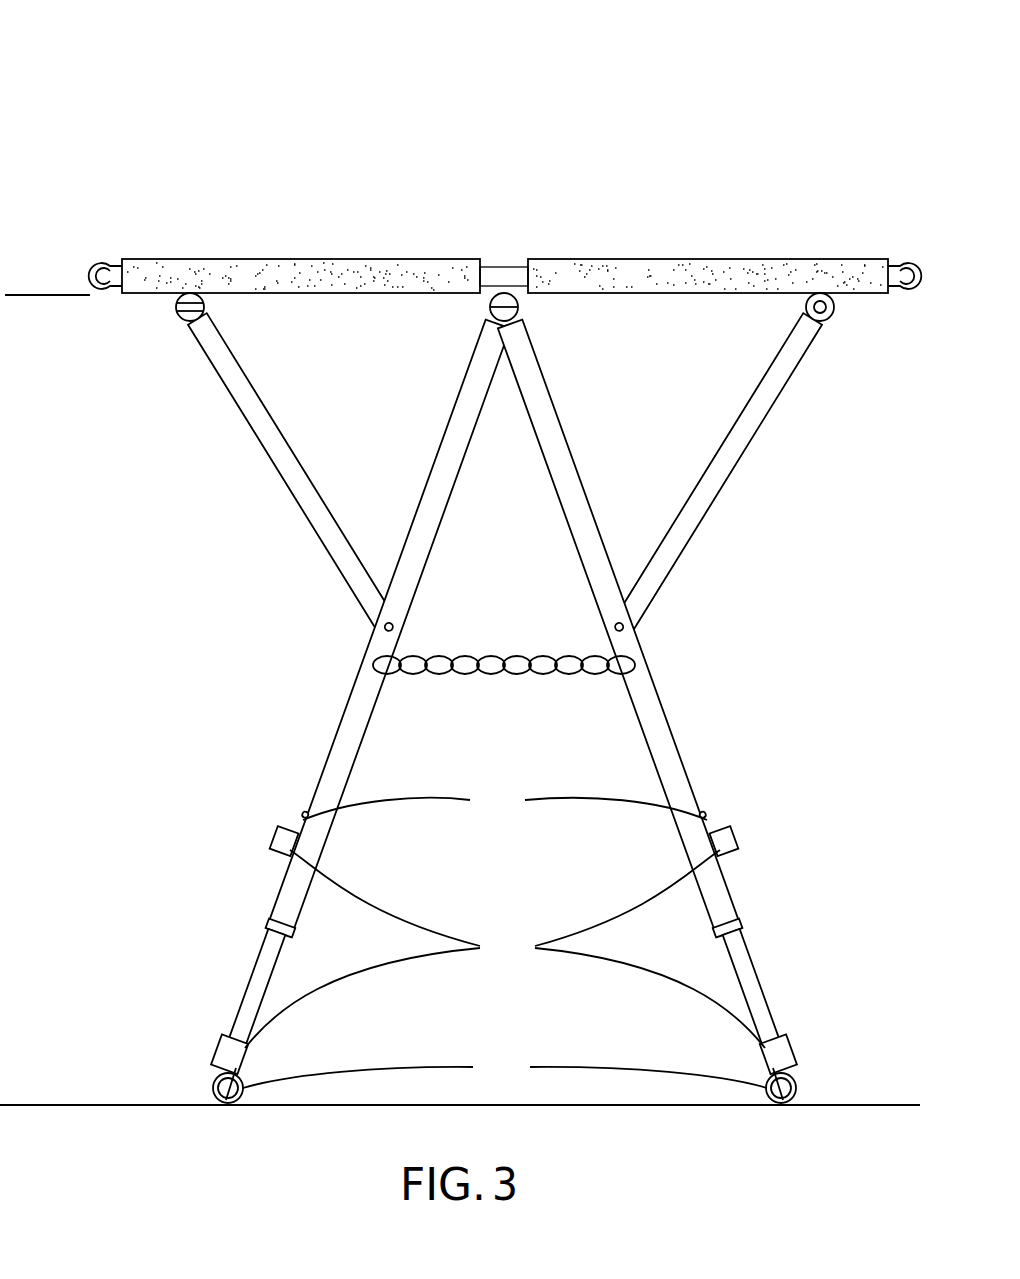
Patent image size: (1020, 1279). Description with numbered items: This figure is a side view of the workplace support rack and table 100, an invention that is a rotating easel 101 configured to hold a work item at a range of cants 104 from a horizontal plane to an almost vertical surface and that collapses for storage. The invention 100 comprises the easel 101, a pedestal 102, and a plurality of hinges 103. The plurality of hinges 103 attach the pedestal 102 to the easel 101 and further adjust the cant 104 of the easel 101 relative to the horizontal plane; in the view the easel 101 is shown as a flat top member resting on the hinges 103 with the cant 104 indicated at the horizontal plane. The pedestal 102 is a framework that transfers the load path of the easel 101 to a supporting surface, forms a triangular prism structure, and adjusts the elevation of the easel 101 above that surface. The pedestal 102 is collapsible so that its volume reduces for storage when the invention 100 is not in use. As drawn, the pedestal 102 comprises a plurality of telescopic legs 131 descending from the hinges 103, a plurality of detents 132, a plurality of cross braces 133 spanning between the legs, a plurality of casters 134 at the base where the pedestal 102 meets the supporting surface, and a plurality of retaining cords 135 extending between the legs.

The workplace support rack and table 100 is at (199, 112).
The easel 101 is at (597, 258).
The pedestal 102 is at (594, 510).
The hinges 103 is at (520, 308).
The cant 104 is at (43, 294).
The telescopic legs 131 is at (560, 472).
The detents 132 is at (505, 802).
The cross braces 133 is at (505, 949).
The casters 134 is at (505, 1070).
The retaining cords 135 is at (493, 676).